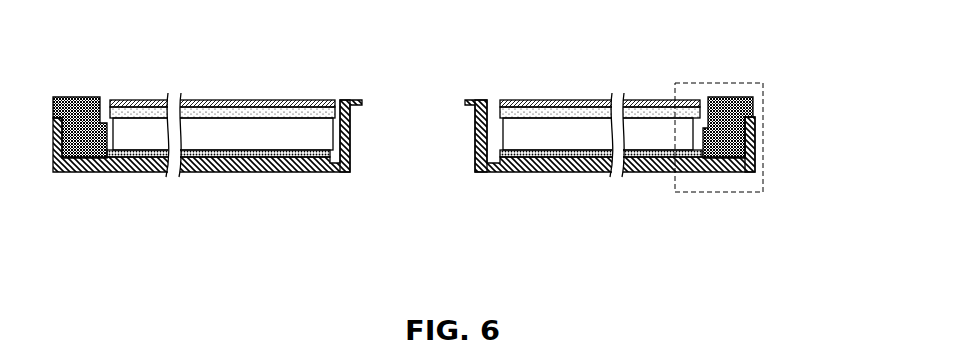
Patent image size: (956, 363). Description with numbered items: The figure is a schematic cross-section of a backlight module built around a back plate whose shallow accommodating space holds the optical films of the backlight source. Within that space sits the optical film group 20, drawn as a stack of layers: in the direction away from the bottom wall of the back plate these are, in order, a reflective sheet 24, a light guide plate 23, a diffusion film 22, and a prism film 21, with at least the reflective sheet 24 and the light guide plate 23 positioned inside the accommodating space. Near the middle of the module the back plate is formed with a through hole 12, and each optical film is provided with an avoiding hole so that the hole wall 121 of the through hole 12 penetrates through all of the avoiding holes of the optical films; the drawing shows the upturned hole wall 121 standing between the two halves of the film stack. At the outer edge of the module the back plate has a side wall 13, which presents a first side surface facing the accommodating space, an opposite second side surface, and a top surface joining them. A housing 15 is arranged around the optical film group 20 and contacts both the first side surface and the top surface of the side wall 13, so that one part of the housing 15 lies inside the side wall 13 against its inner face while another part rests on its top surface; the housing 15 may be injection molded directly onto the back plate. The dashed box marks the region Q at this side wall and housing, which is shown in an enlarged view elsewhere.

The through hole 12 is at (438, 160).
The hole wall 121 is at (477, 132).
The side wall 13 is at (755, 147).
The housing 15 is at (735, 102).
The optical film group 20 is at (404, 183).
The prism film 21 is at (220, 103).
The diffusion film 22 is at (242, 112).
The light guide plate 23 is at (268, 132).
The reflective sheet 24 is at (172, 227).
The region Q is at (705, 193).